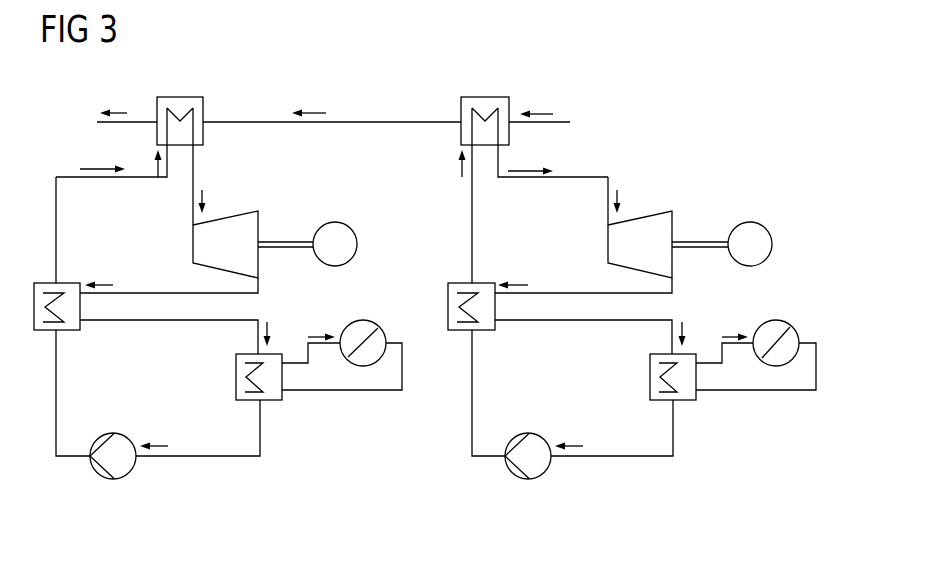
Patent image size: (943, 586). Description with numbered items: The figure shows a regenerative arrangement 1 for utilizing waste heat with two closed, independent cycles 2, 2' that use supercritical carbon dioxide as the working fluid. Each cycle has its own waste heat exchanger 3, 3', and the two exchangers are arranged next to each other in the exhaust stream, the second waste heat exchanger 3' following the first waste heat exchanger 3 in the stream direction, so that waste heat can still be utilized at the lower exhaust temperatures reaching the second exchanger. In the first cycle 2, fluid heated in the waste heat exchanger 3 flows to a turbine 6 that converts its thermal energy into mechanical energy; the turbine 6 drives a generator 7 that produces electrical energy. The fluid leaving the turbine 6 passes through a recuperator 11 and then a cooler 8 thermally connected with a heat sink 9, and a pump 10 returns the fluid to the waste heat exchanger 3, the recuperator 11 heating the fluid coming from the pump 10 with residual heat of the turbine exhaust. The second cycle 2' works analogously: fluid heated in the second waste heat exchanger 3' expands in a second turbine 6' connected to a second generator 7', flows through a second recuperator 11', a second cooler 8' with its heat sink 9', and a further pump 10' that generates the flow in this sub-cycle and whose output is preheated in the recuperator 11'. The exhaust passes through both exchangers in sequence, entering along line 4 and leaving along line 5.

The regenerative arrangement 1 is at (714, 98).
The fluid cycle 2 is at (618, 341).
The second fluid cycle 2' is at (94, 347).
The waste heat exchanger 3 is at (488, 92).
The second waste heat exchanger 3' is at (187, 92).
The heat carrier feed line 4 is at (562, 122).
The heat carrier return line 5 is at (138, 120).
The turbine 6 is at (583, 225).
The second turbine 6' is at (171, 219).
The generator 7 is at (722, 215).
The second generator 7' is at (307, 212).
The cooler 8 is at (595, 360).
The second cooler 8' is at (181, 360).
The heat sink 9 is at (756, 324).
The second heat sink 9' is at (342, 324).
The pump 10 is at (589, 429).
The second pump 10' is at (175, 427).
The recuperator 11 is at (476, 277).
The second recuperator 11' is at (67, 277).